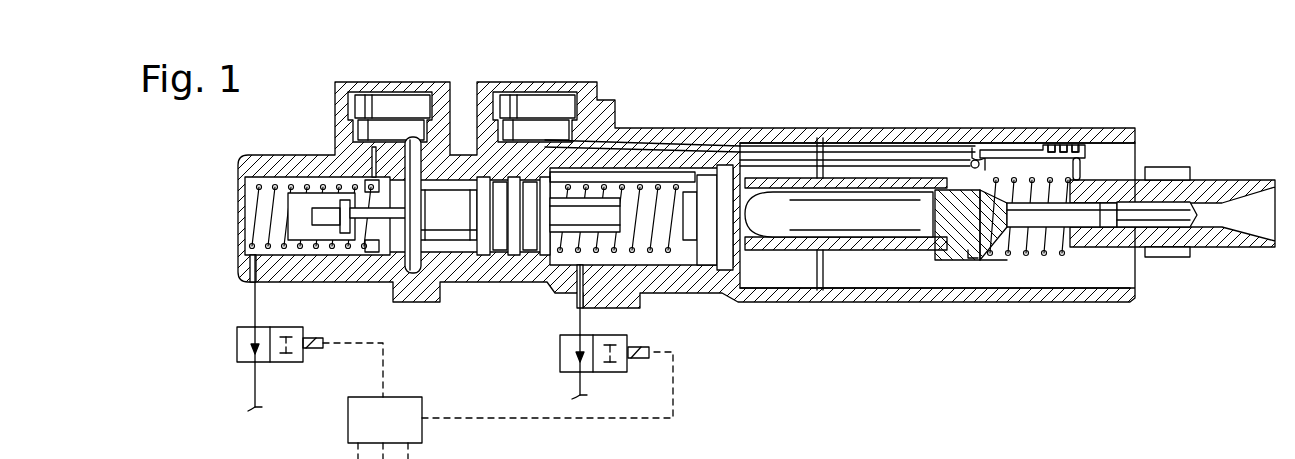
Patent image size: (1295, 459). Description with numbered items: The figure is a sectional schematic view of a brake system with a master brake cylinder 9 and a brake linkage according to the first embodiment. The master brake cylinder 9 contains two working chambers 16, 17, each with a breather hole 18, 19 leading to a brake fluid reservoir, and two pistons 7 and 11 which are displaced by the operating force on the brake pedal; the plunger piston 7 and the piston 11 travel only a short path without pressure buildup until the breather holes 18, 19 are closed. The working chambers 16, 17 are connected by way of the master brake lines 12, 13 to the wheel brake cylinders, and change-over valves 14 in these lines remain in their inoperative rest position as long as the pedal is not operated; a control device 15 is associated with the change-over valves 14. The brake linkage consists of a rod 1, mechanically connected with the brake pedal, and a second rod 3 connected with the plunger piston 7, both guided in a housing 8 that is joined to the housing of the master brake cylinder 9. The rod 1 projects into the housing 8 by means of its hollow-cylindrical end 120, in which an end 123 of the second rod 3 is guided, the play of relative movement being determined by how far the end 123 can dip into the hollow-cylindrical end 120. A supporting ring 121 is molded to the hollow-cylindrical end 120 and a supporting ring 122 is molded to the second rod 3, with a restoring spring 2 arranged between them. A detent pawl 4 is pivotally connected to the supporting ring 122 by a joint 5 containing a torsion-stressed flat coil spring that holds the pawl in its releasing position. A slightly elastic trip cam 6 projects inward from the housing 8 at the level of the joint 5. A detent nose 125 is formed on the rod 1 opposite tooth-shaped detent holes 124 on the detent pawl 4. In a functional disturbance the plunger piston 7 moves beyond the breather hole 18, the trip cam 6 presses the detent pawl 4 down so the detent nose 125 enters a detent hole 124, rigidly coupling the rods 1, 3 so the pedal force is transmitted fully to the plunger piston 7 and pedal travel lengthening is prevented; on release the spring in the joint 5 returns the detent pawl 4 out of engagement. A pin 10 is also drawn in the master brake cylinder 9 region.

The rod 1 is at (1170, 178).
The restoring spring 2 is at (1037, 244).
The second rod 3 is at (839, 214).
The detent pawl 4 is at (1023, 150).
The joint 5 is at (971, 161).
The trip cam 6 is at (979, 166).
The plunger piston 7 is at (741, 170).
The housing 8 is at (843, 137).
The master brake cylinder 9 is at (582, 76).
The tie rod / pin 10 is at (650, 147).
The piston 11 is at (382, 215).
The master brake line 12 is at (250, 293).
The master brake line 13 is at (575, 323).
The change-over valve 14 is at (228, 345).
The control device 15 is at (498, 401).
The working chamber 16 is at (636, 240).
The working chamber 17 is at (268, 188).
The breather hole 18 is at (707, 213).
The breather hole 19 is at (377, 183).
The hollow-cylindrical end 120 is at (1107, 240).
The supporting ring 121 is at (1070, 248).
The supporting ring 122 is at (970, 260).
The end 123 is at (1100, 214).
The detent hole 124 is at (1079, 146).
The detent nose 125 is at (1083, 167).